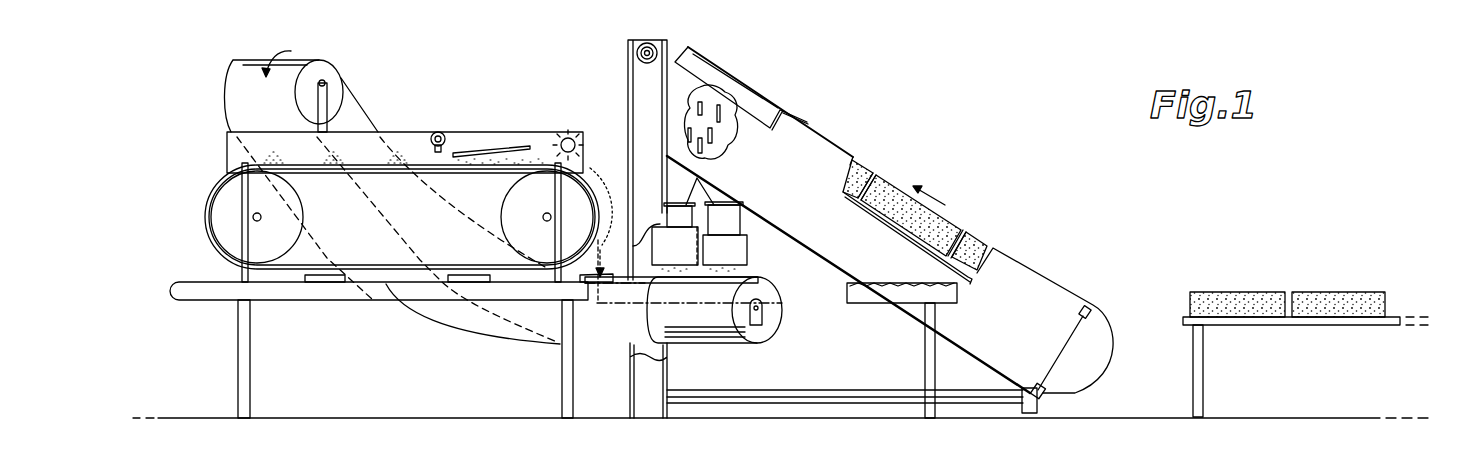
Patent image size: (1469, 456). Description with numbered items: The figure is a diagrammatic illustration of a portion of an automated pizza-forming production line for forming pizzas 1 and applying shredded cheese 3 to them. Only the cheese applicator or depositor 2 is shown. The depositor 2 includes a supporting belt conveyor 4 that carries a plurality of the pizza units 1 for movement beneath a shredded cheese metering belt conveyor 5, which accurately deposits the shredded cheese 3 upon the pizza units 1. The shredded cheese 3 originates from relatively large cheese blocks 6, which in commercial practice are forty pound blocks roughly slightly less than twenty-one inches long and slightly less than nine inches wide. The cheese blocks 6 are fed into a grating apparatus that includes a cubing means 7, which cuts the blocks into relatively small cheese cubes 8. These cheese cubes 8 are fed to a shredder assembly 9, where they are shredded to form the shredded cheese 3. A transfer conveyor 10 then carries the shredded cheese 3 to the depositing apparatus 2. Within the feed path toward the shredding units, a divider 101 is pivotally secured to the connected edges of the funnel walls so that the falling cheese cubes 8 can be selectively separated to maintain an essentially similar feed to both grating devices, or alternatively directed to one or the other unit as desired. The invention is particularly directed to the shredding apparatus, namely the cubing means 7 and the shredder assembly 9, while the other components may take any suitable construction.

The pizza units 1 is at (322, 281).
The cheese depositor 2 is at (211, 264).
The shredded cheese 3 is at (603, 232).
The supporting belt conveyor 4 is at (378, 281).
The shredded cheese metering belt conveyor 5 is at (360, 265).
The cheese blocks 6 is at (984, 243).
The cubing means 7 is at (842, 132).
The cheese cubes 8 is at (722, 105).
The shredder assembly 9 is at (749, 226).
The transfer conveyor 10 is at (709, 344).
The divider 101 is at (716, 158).